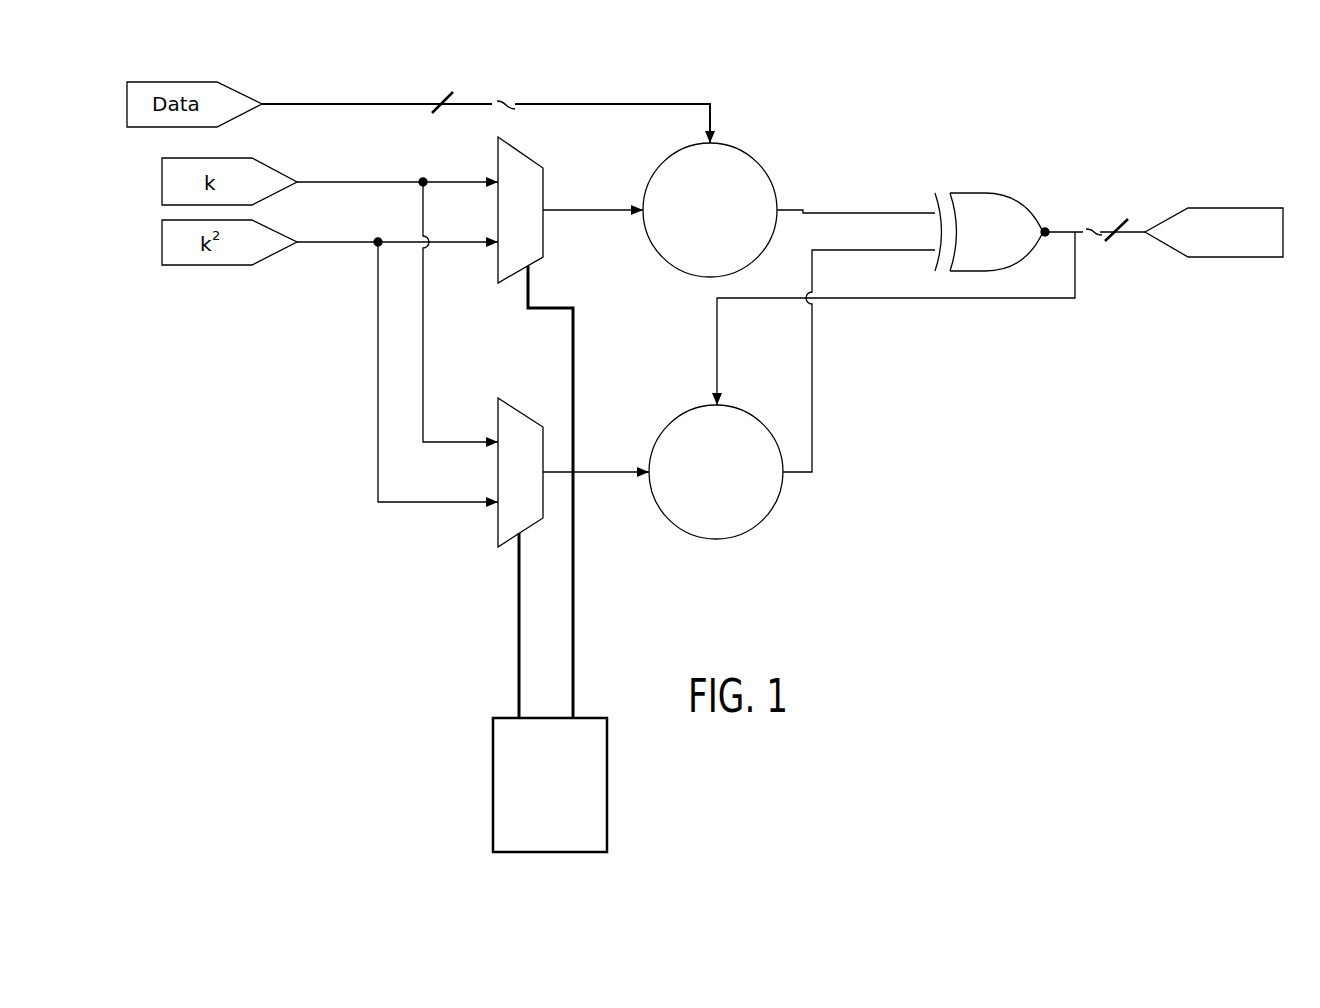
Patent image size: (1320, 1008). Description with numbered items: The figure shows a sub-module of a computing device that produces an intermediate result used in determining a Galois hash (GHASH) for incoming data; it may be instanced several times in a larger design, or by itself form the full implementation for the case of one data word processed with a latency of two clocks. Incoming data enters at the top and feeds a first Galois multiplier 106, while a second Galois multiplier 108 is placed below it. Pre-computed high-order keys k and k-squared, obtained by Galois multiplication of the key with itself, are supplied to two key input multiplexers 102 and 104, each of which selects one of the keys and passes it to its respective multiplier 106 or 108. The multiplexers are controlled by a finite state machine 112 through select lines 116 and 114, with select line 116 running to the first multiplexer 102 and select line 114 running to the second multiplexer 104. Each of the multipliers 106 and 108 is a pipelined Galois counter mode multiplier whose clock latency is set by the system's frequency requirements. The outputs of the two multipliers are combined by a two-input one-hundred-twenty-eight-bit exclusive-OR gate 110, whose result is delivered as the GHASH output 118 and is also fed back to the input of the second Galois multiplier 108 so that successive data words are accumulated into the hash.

The multiplexer 102 is at (546, 172).
The multiplexer 104 is at (497, 402).
The Galois multiplier 106 is at (757, 158).
The Galois multiplier 108 is at (692, 536).
The exclusive-OR gate 110 is at (1020, 203).
The finite state machine 112 is at (550, 785).
The select line 114 is at (515, 600).
The select line 116 is at (576, 338).
The GHASH output 118 is at (1220, 210).